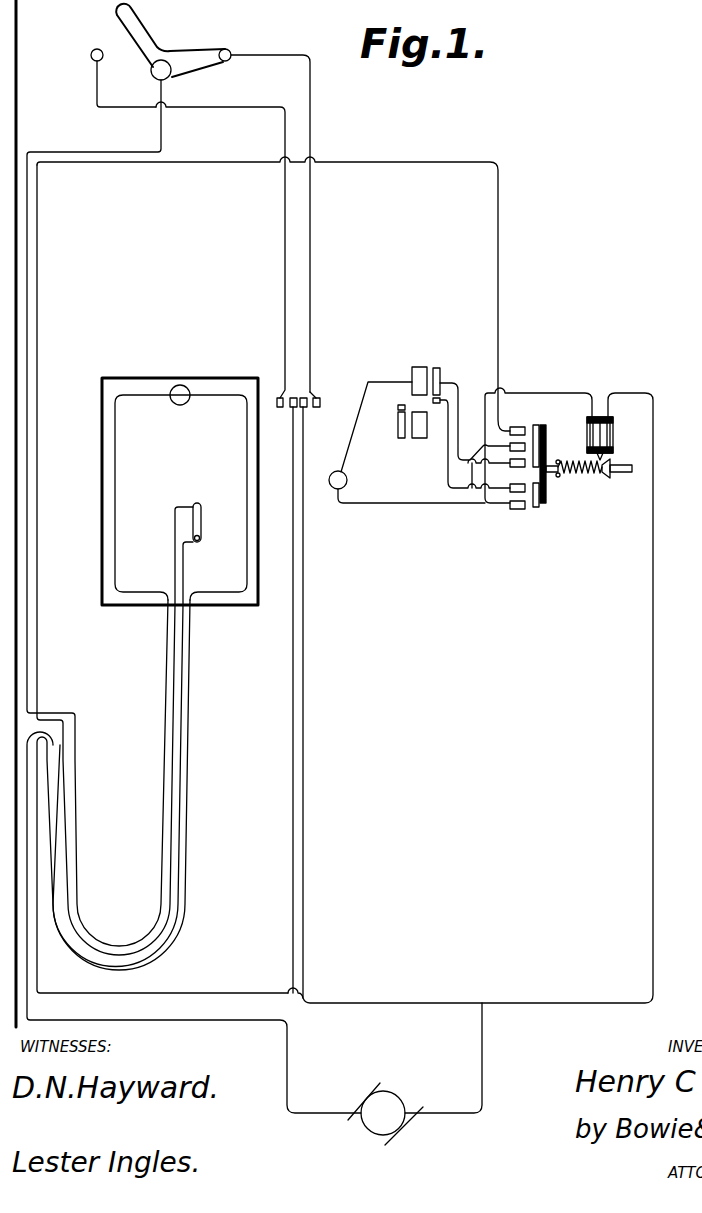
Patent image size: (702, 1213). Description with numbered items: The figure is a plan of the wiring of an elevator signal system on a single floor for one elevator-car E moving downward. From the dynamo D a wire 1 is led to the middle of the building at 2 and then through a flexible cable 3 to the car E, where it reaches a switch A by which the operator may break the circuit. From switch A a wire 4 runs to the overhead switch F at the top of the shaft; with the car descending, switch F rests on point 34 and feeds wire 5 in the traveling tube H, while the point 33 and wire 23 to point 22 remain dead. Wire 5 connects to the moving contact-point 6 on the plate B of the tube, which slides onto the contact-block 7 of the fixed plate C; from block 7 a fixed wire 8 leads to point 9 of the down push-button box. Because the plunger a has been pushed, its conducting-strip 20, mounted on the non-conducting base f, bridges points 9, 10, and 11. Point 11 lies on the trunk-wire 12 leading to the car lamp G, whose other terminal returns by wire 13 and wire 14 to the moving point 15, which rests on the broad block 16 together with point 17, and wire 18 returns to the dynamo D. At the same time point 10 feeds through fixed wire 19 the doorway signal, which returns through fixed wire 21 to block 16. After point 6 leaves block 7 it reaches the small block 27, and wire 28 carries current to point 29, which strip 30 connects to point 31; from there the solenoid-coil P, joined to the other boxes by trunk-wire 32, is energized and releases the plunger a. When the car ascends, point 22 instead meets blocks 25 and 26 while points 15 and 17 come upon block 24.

The wire 1 is at (189, 922).
The middle of the building connection point 2 is at (32, 737).
The flexible cable 3 is at (126, 754).
The wire 4 is at (105, 513).
The wire 5 is at (279, 223).
The contact-point 6 is at (321, 388).
The contact-block 7 is at (441, 372).
The fixed wire 8 is at (475, 435).
The contact point 9 is at (510, 471).
The contact point 10 is at (509, 442).
The contact point 11 is at (519, 421).
The trunk-wire 12 is at (278, 556).
The wire 13 is at (162, 739).
The wire 14 is at (309, 700).
The contact-point 15 is at (314, 413).
The broad contact-block 16 is at (409, 377).
The contact-point 17 is at (286, 415).
The wire 18 is at (287, 702).
The fixed wire 19 is at (411, 506).
The conducting-strip 20 is at (548, 439).
The fixed wire 21 is at (376, 427).
The contact-point 22 is at (270, 409).
The wire 23 is at (220, 250).
The contact-block 24 is at (421, 433).
The contact-block 25 is at (395, 433).
The small block 26 is at (391, 405).
The small block 27 is at (447, 399).
The wire 28 is at (467, 444).
The contact point 29 is at (509, 492).
The conducting-strip 30 is at (542, 505).
The contact point 31 is at (538, 457).
The trunk-wire 32 is at (482, 698).
The switch point 33 is at (114, 78).
The switch point 34 is at (233, 62).
The switch in the car A is at (206, 522).
The moving contact-plate B is at (294, 382).
The fixed contact-plate C is at (424, 356).
The dynamo D is at (415, 1082).
The elevator-car E is at (180, 491).
The overhead switch F is at (170, 42).
The car lamp or signal G is at (185, 401).
The traveling tube H is at (345, 481).
The solenoid-coil P is at (608, 438).
The push-button plunger a is at (617, 476).
The non-conducting base f is at (571, 464).